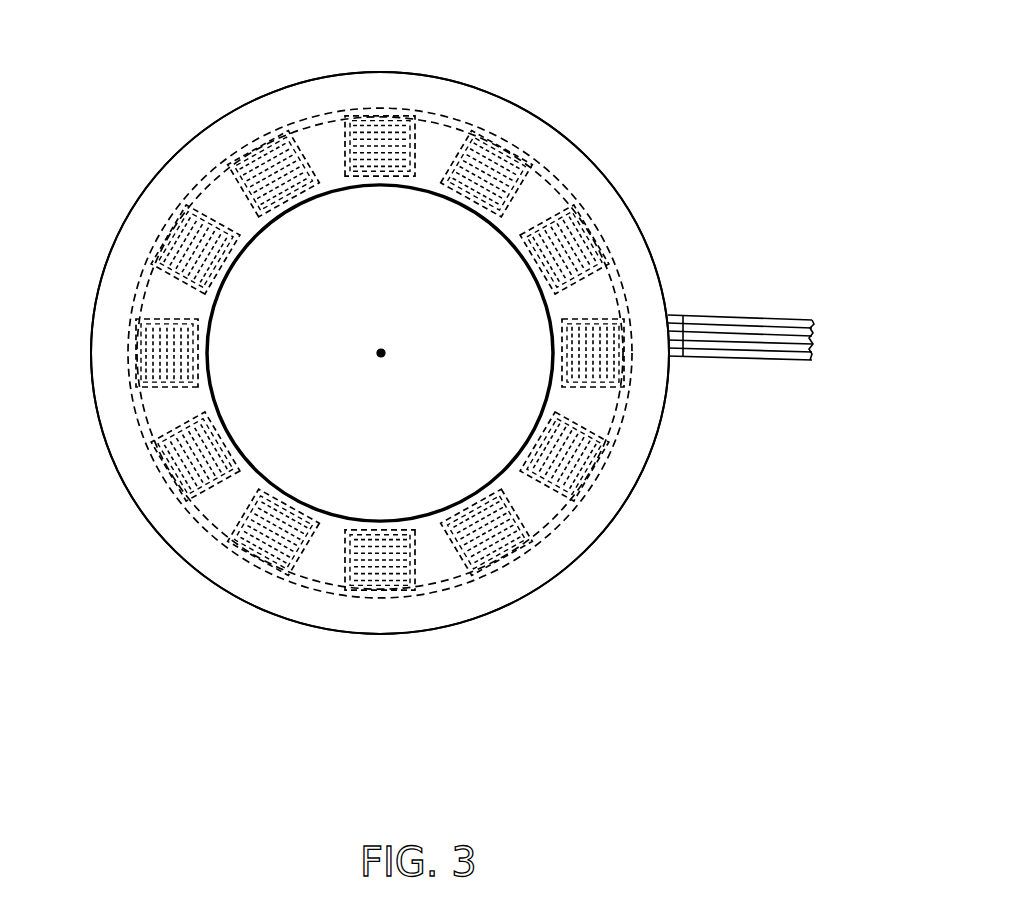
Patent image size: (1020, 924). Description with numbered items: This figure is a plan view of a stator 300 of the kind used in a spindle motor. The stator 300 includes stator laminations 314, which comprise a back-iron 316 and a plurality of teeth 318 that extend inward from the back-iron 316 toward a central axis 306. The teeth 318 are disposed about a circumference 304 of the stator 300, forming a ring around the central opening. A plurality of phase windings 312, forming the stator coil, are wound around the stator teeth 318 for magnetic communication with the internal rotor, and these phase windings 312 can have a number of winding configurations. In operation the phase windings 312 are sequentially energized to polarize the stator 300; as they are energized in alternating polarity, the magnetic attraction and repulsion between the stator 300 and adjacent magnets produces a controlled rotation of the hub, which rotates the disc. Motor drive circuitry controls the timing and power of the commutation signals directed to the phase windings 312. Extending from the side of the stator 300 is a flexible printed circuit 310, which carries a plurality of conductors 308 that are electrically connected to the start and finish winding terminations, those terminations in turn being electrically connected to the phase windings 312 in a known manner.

The stator 300 is at (183, 73).
The circumference 304 is at (380, 353).
The central axis 306 is at (381, 353).
The conductors 308 is at (747, 358).
The flexible printed circuit 310 is at (807, 347).
The phase windings 312 is at (380, 353).
The stator laminations 314 is at (380, 353).
The back-iron 316 is at (380, 353).
The teeth 318 is at (380, 353).